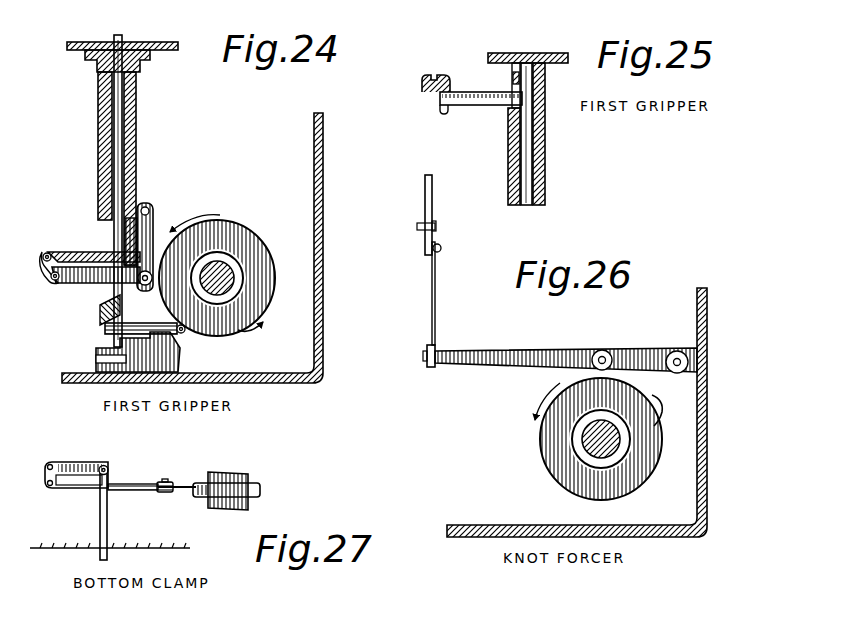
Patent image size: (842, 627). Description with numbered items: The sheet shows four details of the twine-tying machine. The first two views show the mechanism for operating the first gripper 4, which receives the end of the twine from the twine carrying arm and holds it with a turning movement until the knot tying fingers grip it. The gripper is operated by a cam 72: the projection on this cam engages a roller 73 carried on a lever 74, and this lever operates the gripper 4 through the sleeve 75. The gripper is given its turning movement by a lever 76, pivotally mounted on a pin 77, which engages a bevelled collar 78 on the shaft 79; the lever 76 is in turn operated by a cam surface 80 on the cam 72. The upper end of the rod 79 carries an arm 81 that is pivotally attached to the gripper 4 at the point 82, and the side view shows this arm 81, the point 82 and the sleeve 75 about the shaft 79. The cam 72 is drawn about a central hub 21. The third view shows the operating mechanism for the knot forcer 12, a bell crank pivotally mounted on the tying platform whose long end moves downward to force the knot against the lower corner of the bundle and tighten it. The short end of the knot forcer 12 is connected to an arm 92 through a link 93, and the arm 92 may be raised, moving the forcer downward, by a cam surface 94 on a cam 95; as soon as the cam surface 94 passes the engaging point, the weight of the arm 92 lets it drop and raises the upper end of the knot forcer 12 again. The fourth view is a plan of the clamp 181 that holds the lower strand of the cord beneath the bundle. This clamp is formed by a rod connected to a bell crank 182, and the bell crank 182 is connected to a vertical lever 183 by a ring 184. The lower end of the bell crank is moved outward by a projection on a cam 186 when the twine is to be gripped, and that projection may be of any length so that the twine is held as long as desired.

In FIG. 25, the first gripper 4 is at (425, 83).
In FIG. 26, the knot forcer 12 is at (432, 199).
In FIG. 24, the hub 21 is at (238, 288).
In FIG. 24, the cam 72 is at (268, 252).
In FIG. 24, the roller 73 is at (148, 257).
In FIG. 24, the lever 74 is at (84, 283).
In FIG. 24, the sleeve 75 is at (100, 224).
In FIG. 25, the sleeve 75 is at (508, 147).
In FIG. 24, the lever 76 is at (130, 333).
In FIG. 24, the pin 77 is at (170, 348).
In FIG. 24, the bevelled collar 78 is at (102, 315).
In FIG. 24, the shaft 79 is at (120, 150).
In FIG. 25, the shaft 79 is at (528, 139).
In FIG. 24, the cam surface 80 is at (236, 336).
In FIG. 25, the arm 81 is at (486, 105).
In FIG. 25, the point 82 is at (442, 101).
In FIG. 26, the arm 92 is at (515, 364).
In FIG. 26, the link 93 is at (437, 304).
In FIG. 26, the cam surface 94 is at (662, 405).
In FIG. 26, the cam 95 is at (654, 453).
In FIG. 27, the clamp 181 is at (100, 558).
In FIG. 27, the bell crank 182 is at (70, 463).
In FIG. 27, the vertical lever 183 is at (174, 484).
In FIG. 27, the ring 184 is at (120, 484).
In FIG. 27, the cam 186 is at (263, 490).